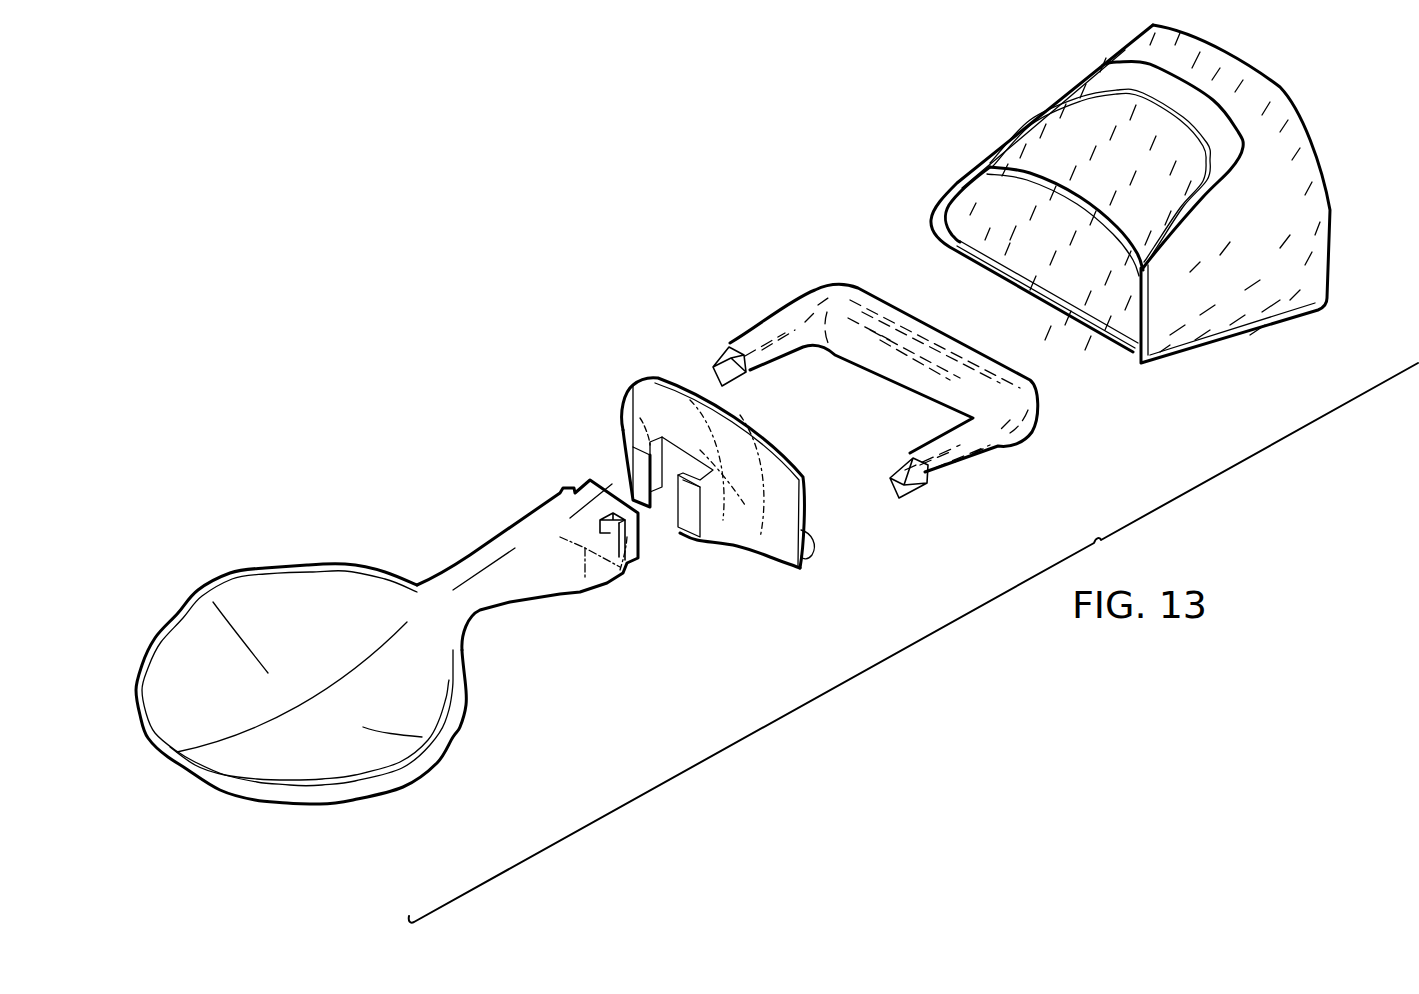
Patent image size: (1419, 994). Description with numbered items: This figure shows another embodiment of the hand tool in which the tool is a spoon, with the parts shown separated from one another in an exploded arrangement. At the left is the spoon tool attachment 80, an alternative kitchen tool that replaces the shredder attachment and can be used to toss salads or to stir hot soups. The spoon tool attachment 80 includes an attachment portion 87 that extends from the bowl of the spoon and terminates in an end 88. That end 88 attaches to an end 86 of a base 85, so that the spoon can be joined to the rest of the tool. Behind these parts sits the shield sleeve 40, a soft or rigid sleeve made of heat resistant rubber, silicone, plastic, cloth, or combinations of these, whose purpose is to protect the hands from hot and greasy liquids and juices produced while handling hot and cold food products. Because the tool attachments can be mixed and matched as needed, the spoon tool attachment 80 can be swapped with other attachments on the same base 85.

The shield sleeve 40 is at (1237, 310).
The spoon tool attachment 80 is at (198, 643).
The base 85 is at (608, 363).
The end of base 86 is at (777, 572).
The attachment portion 87 is at (442, 545).
The end of attachment portion 88 is at (633, 567).